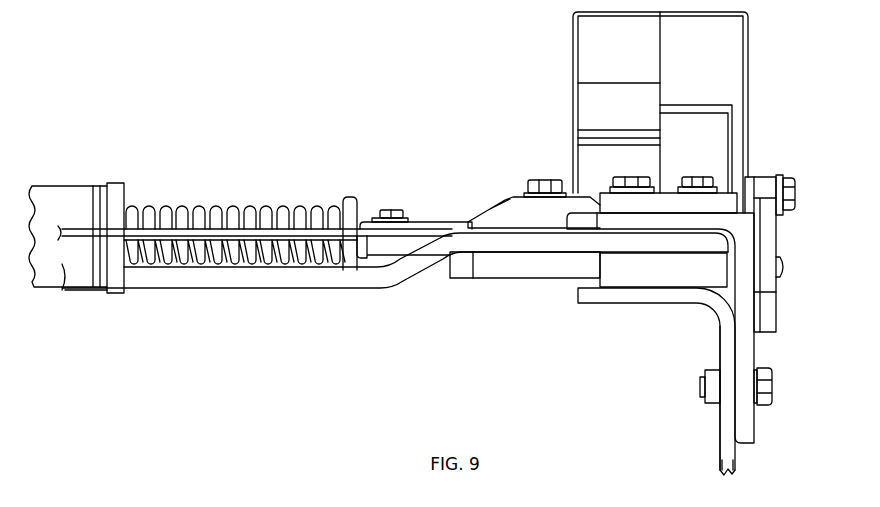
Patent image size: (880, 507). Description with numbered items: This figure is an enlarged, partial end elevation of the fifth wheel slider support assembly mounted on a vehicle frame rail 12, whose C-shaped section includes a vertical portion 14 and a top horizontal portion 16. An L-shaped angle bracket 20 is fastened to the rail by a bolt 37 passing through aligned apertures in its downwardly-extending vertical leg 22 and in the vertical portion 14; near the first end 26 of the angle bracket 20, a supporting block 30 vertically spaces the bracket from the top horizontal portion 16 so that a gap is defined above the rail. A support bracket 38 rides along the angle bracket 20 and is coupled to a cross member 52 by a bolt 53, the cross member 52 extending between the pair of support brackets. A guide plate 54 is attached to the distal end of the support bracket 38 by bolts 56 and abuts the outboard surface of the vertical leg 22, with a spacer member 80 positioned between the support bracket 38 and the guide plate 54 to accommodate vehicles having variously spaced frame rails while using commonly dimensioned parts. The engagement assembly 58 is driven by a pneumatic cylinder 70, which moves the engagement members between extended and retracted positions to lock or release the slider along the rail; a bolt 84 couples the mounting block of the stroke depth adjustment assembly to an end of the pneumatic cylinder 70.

The vehicle frame rail 12 is at (727, 423).
The vertical portion 14 is at (735, 455).
The top horizontal portion 16 is at (613, 303).
The angle bracket 20 is at (745, 358).
The vertical leg 22 is at (753, 342).
The first end 26 is at (728, 228).
The supporting block 30 is at (650, 272).
The bolt 37 is at (773, 383).
The support bracket 38 is at (748, 25).
The cross member 52 is at (80, 229).
The bolt 53 is at (538, 178).
The guide plate 54 is at (777, 290).
The bolt 56 is at (793, 188).
The engagement assembly 58 is at (357, 153).
The pneumatic cylinder 70 is at (78, 186).
The spacer member 80 is at (752, 188).
The bolt 84 is at (387, 207).